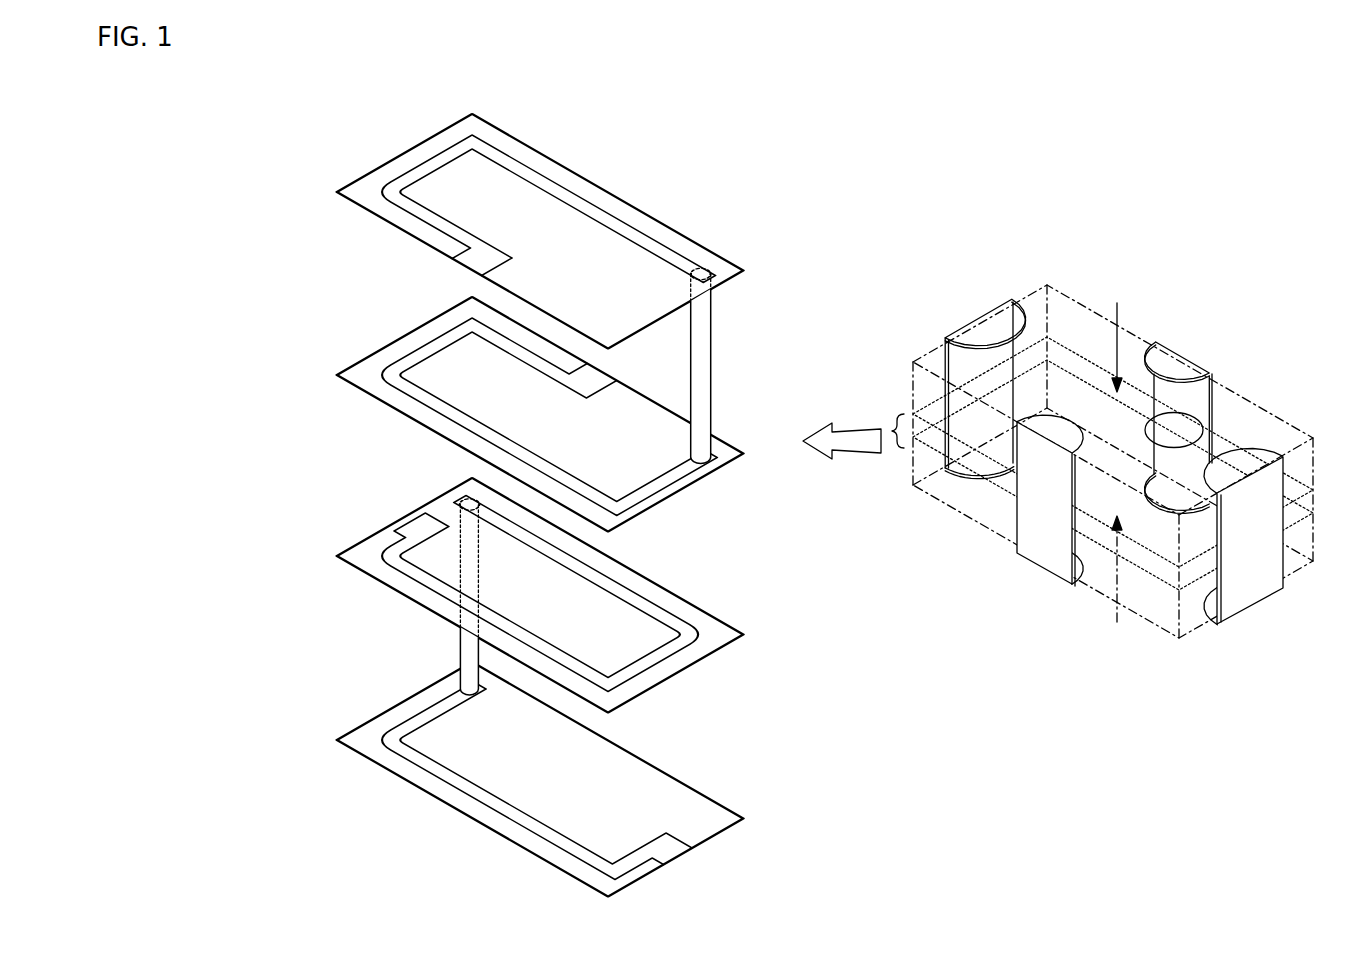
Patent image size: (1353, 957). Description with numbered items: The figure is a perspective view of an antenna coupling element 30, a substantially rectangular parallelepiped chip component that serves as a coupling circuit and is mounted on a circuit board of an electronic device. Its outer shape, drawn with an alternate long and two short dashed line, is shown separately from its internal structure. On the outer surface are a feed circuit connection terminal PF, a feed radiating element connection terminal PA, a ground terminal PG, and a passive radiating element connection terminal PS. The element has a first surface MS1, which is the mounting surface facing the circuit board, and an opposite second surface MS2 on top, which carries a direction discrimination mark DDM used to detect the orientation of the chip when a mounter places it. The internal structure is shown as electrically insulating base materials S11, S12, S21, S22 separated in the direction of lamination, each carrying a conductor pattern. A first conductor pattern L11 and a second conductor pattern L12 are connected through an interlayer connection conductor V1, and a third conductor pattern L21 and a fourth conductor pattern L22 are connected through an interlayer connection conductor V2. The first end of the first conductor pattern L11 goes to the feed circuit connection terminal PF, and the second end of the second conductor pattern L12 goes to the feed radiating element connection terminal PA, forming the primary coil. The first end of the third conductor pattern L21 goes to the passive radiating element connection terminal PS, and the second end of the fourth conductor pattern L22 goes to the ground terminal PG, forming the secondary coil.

The electrically insulating base material S22 is at (740, 272).
The electrically insulating base material S21 is at (740, 452).
The electrically insulating base material S12 is at (741, 634).
The electrically insulating base material S11 is at (742, 815).
The fourth conductor pattern L22 is at (415, 168).
The third conductor pattern L21 is at (415, 349).
The second conductor pattern L12 is at (660, 617).
The first conductor pattern L11 is at (493, 802).
The interlayer connection conductor V2 is at (709, 355).
The interlayer connection conductor V1 is at (465, 652).
The antenna coupling element 30 is at (1218, 251).
The feed radiating element connection terminal PA is at (990, 330).
The passive radiating element connection terminal PS is at (1180, 363).
The ground terminal PG is at (1033, 515).
The feed circuit connection terminal PF is at (1248, 578).
The second surface MS2 is at (1123, 333).
The first surface MS1 is at (1123, 585).
The direction discrimination mark DDM is at (1180, 425).